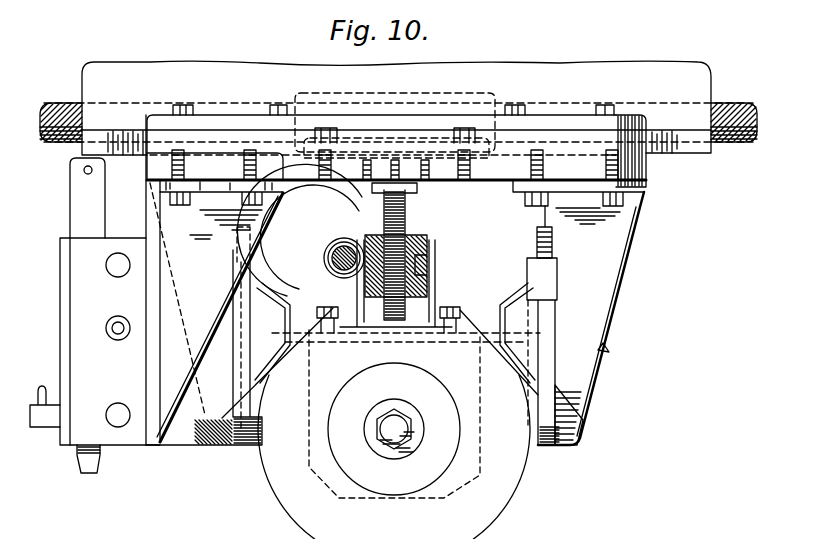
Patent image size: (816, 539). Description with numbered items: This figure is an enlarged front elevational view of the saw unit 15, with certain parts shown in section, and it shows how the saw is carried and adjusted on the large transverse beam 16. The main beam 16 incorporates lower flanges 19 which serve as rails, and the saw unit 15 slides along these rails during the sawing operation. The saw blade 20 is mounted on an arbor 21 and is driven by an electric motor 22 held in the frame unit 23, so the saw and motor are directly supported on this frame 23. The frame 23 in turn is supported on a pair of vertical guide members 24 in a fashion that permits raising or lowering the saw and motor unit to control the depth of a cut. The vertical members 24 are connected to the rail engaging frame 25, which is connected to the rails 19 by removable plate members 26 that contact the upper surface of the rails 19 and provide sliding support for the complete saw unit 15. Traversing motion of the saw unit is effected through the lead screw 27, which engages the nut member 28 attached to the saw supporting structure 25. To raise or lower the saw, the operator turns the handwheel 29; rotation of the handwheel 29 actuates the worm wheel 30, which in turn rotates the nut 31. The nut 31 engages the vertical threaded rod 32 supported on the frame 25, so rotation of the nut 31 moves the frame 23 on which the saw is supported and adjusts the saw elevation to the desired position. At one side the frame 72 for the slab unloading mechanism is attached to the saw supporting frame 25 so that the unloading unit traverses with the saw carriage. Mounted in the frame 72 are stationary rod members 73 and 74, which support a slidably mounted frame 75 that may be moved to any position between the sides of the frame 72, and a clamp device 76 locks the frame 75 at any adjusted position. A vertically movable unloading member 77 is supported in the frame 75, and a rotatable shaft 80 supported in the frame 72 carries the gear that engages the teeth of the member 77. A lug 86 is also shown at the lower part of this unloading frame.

The saw unit 15 is at (606, 347).
The transverse beam 16 is at (650, 72).
The lower flanges 19 is at (685, 153).
The saw blade 20 is at (494, 500).
The arbor 21 is at (412, 432).
The electric motor 22 is at (296, 478).
The frame unit 23 is at (218, 442).
The vertical guide members 24 is at (230, 313).
The rail engaging frame 25 is at (160, 166).
The removable plate members 26 is at (158, 120).
The lead screw 27 is at (733, 104).
The nut member 28 is at (467, 92).
The handwheel 29 is at (306, 217).
The worm wheel 30 is at (429, 262).
The nut 31 is at (437, 298).
The vertical threaded rod 32 is at (406, 210).
The frame 72 is at (169, 443).
The stationary rod member 73 is at (106, 264).
The stationary rod member 74 is at (108, 407).
The slidably mounted frame 75 is at (62, 293).
The clamp device 76 is at (44, 427).
The vertically movable member 77 is at (72, 221).
The rotatable shaft 80 is at (105, 329).
The lug 86 is at (78, 462).